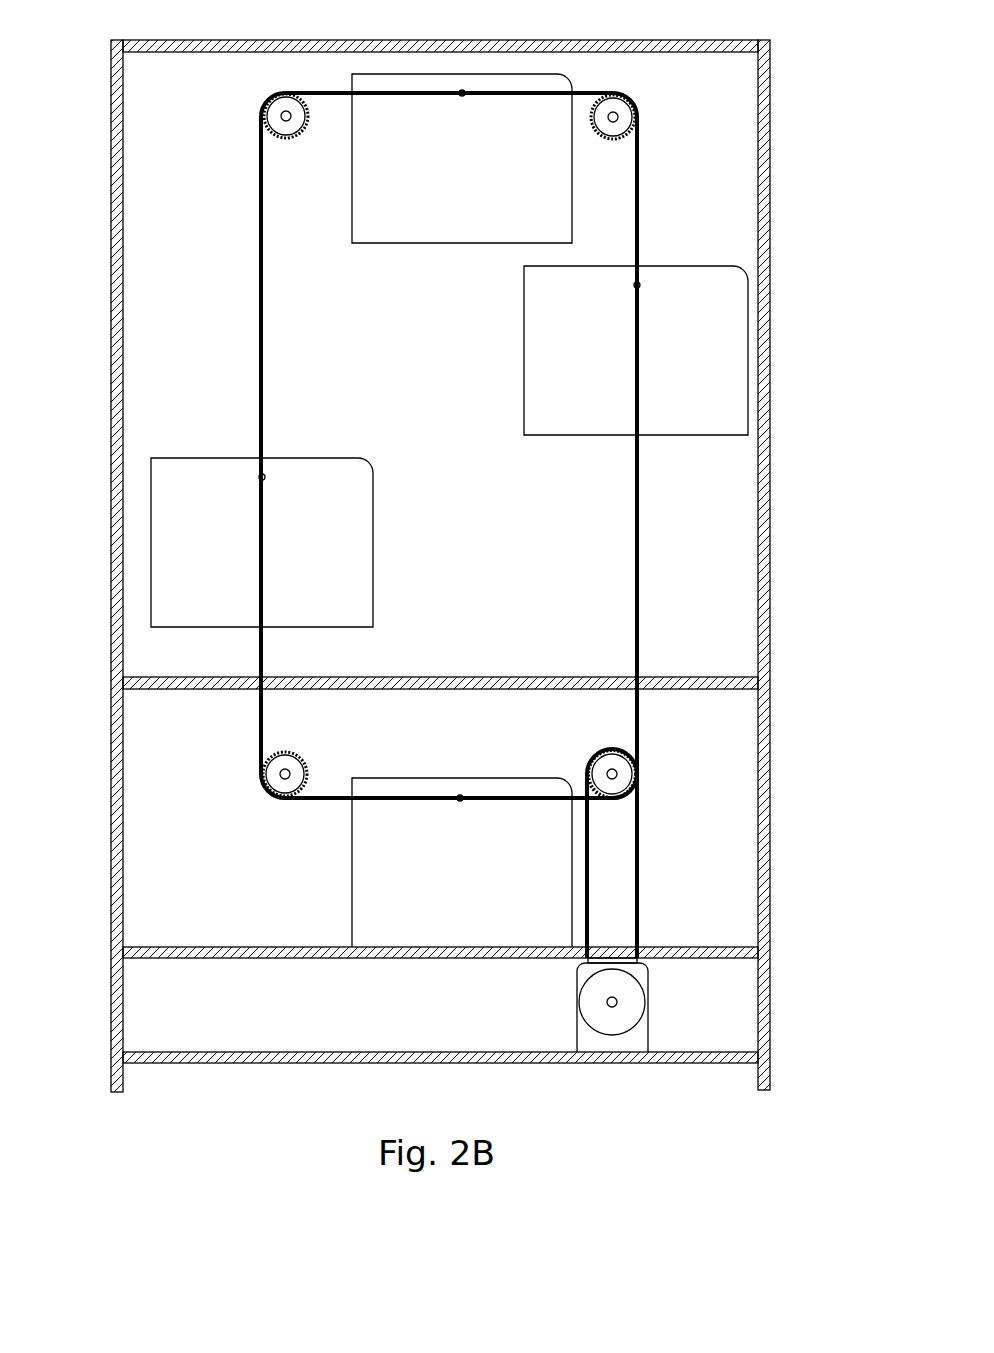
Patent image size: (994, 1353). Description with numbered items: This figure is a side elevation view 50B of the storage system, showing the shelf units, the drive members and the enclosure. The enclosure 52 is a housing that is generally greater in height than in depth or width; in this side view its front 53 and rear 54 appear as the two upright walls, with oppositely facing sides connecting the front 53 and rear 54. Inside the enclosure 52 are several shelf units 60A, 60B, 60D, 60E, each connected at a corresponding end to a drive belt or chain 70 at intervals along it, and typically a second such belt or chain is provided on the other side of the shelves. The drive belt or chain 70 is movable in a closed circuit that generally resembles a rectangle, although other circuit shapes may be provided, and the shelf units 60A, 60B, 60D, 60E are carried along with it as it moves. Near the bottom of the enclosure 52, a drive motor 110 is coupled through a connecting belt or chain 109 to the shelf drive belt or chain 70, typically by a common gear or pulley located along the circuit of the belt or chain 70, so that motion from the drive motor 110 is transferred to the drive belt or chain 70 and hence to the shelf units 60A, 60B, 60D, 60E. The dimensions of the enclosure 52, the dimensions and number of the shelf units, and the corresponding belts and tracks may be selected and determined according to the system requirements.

The side elevation view 50B is at (427, 570).
The enclosure 52 is at (108, 37).
The front 53 is at (772, 170).
The rear 54 is at (110, 515).
The drive belt or chain 70 is at (262, 360).
The shelf unit 60A is at (602, 364).
The shelf unit 60B is at (483, 880).
The shelf unit 60D is at (330, 556).
The shelf unit 60E is at (470, 180).
The connecting belt or chain 109 is at (638, 853).
The drive motor 110 is at (577, 995).